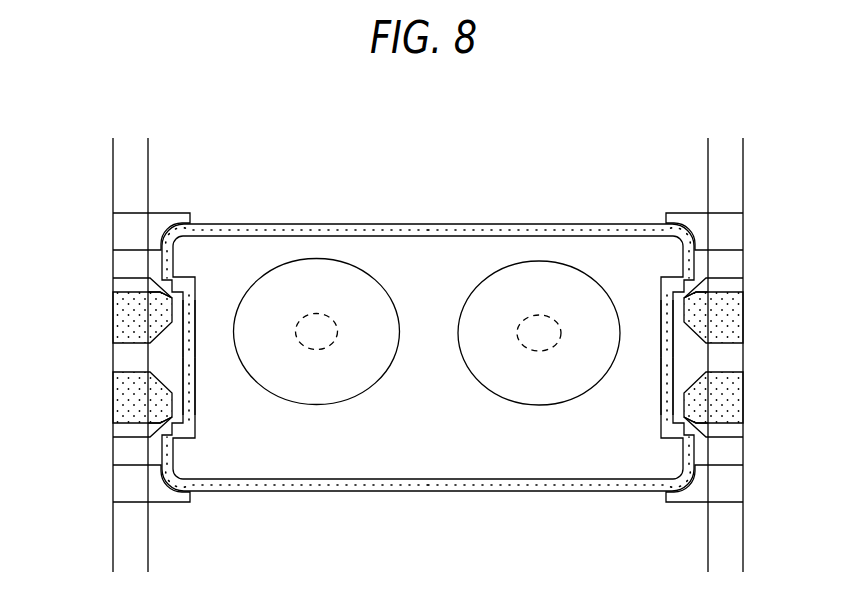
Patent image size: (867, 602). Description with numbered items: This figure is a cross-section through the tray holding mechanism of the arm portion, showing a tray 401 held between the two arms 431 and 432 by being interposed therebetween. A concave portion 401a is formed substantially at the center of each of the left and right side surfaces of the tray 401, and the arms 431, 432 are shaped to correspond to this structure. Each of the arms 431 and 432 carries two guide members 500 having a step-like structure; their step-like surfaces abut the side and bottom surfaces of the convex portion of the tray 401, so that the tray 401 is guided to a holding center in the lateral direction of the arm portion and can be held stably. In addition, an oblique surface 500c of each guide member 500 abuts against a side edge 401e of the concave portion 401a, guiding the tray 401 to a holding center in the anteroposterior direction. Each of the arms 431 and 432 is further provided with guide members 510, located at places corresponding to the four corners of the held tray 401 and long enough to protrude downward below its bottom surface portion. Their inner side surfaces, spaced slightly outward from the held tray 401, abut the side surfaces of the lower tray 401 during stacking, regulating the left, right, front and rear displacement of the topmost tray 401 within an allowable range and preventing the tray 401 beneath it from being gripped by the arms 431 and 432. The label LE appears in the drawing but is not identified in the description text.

The tray 401 is at (417, 223).
The concave portion 401a is at (172, 353).
The side edge 401e is at (158, 288).
The arm 431 is at (718, 183).
The arm 432 is at (135, 182).
The guide member 500 is at (125, 312).
The oblique surface 500c is at (166, 298).
The guide member 510 is at (140, 228).
The light emitting element LE is at (368, 377).